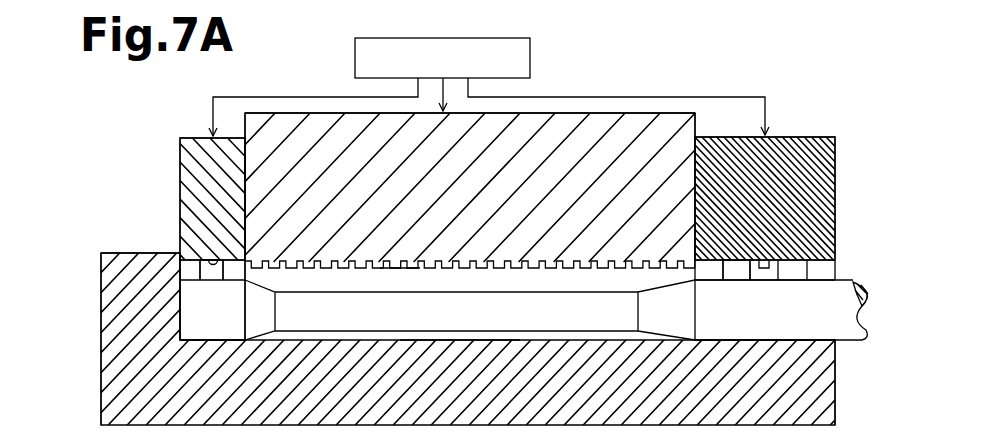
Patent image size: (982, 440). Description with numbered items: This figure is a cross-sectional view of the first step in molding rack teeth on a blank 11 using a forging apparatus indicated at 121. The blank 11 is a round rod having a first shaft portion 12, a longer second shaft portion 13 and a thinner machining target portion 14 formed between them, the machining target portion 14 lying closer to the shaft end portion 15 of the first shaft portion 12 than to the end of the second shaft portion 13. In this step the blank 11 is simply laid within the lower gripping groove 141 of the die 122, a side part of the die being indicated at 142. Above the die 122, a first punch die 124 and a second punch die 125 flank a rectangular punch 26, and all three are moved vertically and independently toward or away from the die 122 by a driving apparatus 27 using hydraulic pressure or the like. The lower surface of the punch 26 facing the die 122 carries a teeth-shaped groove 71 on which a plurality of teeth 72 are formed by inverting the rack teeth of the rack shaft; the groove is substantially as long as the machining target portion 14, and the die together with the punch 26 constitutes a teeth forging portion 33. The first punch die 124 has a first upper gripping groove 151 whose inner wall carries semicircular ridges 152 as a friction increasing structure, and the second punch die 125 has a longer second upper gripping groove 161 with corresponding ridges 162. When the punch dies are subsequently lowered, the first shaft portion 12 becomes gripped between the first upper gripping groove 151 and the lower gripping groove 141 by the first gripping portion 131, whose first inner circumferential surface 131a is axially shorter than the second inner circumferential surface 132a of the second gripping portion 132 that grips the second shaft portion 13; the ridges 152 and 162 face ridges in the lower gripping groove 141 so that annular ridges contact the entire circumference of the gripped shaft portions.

The blank 11 is at (850, 341).
The first shaft portion 12 is at (198, 340).
The second shaft portion 13 is at (740, 341).
The machining target portion 14 is at (340, 341).
The shaft end portion 15 is at (183, 323).
The punch 26 is at (610, 113).
The driving apparatus 27 is at (530, 55).
The teeth forging portion 33 is at (661, 110).
The teeth-shaped groove 71 is at (452, 262).
The teeth 72 is at (402, 266).
The frame 121 is at (120, 128).
The die 122 is at (101, 340).
The first punch die 124 is at (193, 138).
The second punch die 125 is at (797, 137).
The first gripping portion 131 is at (150, 232).
The first inner circumferential surface 131a is at (195, 272).
The second gripping portion 132 is at (837, 213).
The second inner circumferential surface 132a is at (815, 273).
The lower gripping groove 141 is at (455, 342).
The side plate 142 is at (116, 313).
The first upper gripping groove 151 is at (213, 257).
The ridges 152 is at (213, 282).
The second upper gripping groove 161 is at (764, 266).
The ridges 162 is at (727, 282).